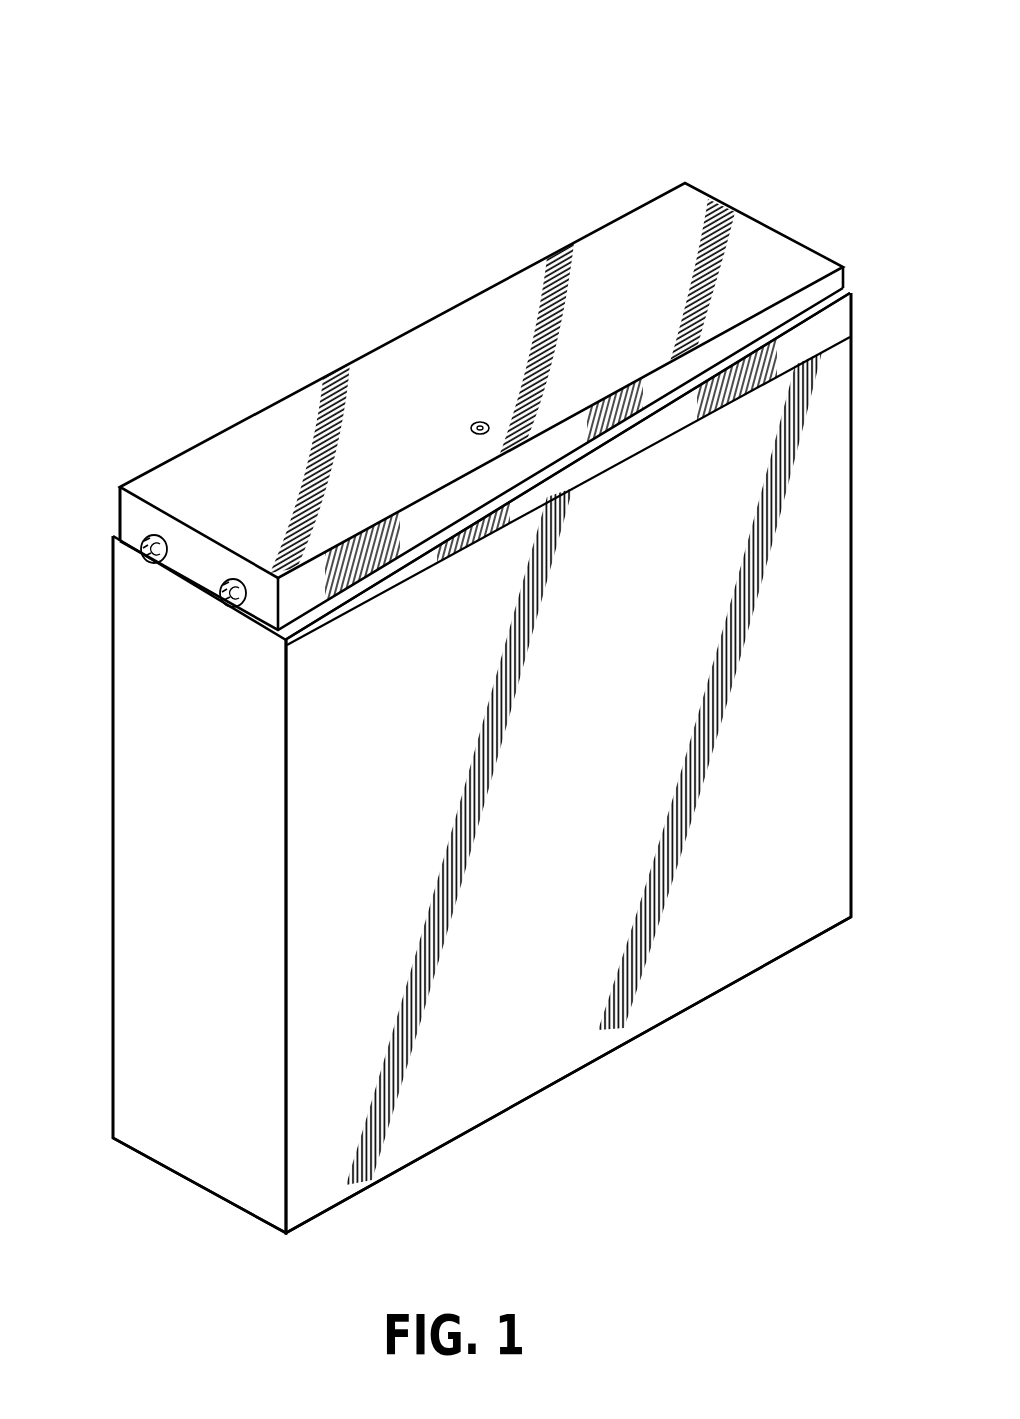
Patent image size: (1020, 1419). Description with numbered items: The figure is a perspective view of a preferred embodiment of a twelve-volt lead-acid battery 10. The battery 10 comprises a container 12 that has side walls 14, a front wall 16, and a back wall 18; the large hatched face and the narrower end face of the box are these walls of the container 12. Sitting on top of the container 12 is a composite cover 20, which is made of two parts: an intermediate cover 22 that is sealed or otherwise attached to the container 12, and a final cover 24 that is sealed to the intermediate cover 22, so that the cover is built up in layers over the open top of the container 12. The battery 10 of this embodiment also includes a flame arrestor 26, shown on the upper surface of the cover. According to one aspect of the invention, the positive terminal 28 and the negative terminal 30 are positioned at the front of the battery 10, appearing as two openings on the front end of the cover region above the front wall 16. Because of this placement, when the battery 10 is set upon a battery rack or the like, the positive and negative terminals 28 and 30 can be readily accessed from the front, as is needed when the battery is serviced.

The 12-volt lead-acid battery 10 is at (471, 163).
The container 12 is at (484, 1070).
The side walls 14 is at (610, 758).
The front wall 16 is at (198, 856).
The back wall 18 is at (851, 352).
The composite cover 20 is at (374, 346).
The intermediate cover 22 is at (120, 507).
The final cover 24 is at (407, 470).
The flame arrestor 26 is at (481, 421).
The positive terminal 28 is at (236, 607).
The negative terminal 30 is at (157, 563).